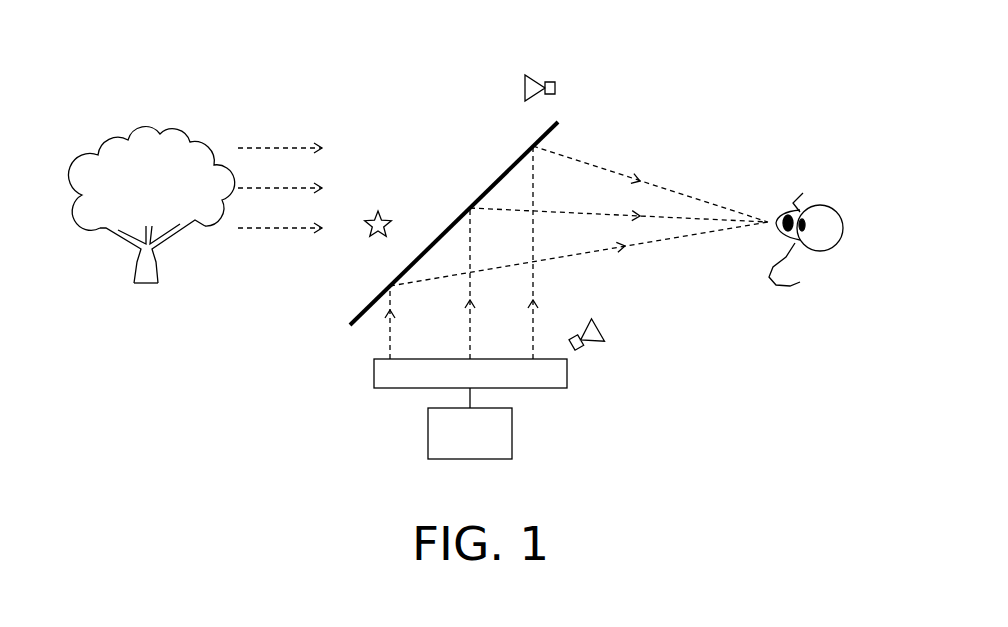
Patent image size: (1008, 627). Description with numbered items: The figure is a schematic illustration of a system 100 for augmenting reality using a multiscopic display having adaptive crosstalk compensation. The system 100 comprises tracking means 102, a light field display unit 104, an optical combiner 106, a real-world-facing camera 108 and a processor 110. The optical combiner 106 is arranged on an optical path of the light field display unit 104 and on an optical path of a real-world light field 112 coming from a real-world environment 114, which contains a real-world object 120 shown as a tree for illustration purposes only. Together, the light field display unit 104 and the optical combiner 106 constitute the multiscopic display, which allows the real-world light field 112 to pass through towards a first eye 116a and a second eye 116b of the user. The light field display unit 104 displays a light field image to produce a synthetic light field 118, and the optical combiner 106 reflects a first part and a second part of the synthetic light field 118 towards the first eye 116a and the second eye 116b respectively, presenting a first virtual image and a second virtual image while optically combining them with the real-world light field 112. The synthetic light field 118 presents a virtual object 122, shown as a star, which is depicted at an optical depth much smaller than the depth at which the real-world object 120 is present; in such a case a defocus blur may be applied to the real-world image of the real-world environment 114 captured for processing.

The system 100 is at (358, 92).
The tracking means 102 is at (607, 337).
The light field display unit 104 is at (567, 373).
The optical combiner 106 is at (352, 327).
The real-world-facing camera 108 is at (523, 88).
The processor 110 is at (491, 452).
The real-world light field 112 is at (295, 219).
The real-world environment 114 is at (128, 115).
The first eye 116a is at (805, 212).
The second eye 116b is at (833, 242).
The synthetic light field 118 is at (590, 163).
The real-world object 120 is at (108, 220).
The virtual object 122 is at (372, 240).